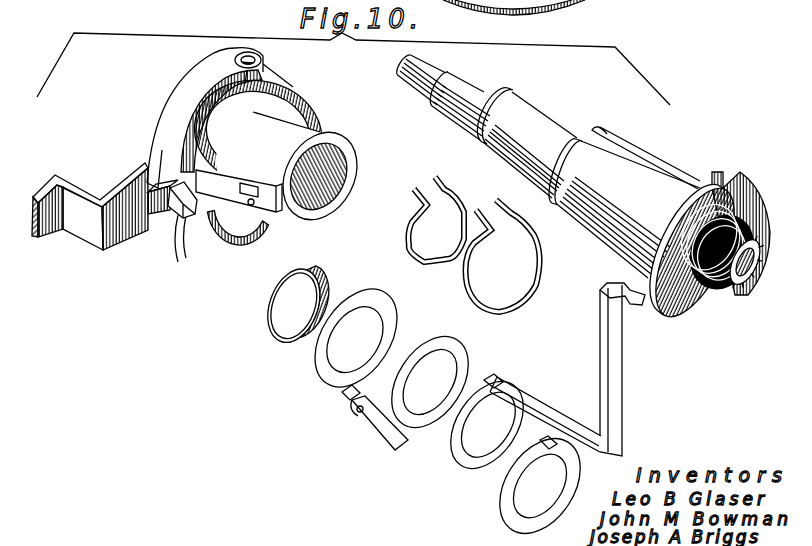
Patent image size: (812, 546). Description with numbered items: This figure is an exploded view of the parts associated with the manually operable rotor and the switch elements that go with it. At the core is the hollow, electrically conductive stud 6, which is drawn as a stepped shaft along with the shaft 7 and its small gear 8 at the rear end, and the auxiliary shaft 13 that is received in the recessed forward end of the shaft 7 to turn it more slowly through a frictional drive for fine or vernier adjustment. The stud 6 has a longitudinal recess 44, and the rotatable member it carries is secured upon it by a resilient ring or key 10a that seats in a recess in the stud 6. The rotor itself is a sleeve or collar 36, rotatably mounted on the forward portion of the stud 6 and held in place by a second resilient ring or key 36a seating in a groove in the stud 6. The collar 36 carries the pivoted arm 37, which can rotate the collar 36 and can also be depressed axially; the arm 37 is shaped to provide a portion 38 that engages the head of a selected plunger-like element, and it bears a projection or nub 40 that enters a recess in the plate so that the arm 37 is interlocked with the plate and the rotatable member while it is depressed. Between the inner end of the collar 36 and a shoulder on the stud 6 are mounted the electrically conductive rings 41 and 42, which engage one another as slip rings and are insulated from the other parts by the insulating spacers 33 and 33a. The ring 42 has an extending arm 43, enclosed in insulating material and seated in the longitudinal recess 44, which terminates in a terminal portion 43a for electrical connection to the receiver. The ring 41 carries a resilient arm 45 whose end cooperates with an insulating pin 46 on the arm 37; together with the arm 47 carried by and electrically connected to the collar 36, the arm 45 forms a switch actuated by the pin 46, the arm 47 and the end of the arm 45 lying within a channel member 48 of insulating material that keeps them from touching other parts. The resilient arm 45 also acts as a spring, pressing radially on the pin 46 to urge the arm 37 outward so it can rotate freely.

The stud 6 is at (556, 118).
The shaft 7 is at (481, 89).
The small gear 8 is at (745, 288).
The resilient ring or key 10a is at (535, 263).
The auxiliary shaft 13 is at (414, 86).
The insulating spacer 33 is at (391, 315).
The insulating spacer 33a is at (268, 318).
The collar 36 is at (318, 136).
The resilient ring or key 36a is at (408, 219).
The pivoted arm 37 is at (173, 130).
The portion of arm 38 is at (102, 248).
The projection or nub 40 is at (153, 235).
The electrically conductive ring 41 is at (435, 382).
The electrically conductive ring 42 is at (457, 447).
The extending arm 43 is at (587, 457).
The terminal portion 43a is at (642, 306).
The longitudinal recess 44 is at (637, 157).
The resilient arm 45 is at (383, 433).
The insulating pin 46 is at (181, 224).
The arm 47 is at (208, 245).
The channel member 48 is at (226, 161).